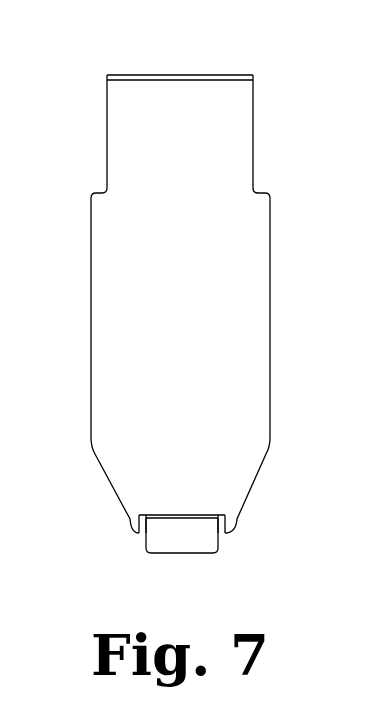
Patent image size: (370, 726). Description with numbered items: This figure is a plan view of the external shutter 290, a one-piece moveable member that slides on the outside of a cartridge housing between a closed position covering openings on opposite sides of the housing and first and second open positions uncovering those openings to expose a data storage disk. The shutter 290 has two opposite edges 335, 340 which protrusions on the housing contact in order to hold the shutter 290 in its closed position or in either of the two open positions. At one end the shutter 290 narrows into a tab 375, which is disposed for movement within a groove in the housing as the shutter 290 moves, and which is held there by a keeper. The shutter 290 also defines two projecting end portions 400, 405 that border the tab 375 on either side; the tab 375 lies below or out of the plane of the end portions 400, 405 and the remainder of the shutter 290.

The external shutter 290 is at (178, 77).
The edge 335 is at (107, 133).
The edge 340 is at (253, 131).
The tab 375 is at (180, 545).
The projecting end portion 400 is at (139, 525).
The projecting end portion 405 is at (225, 525).